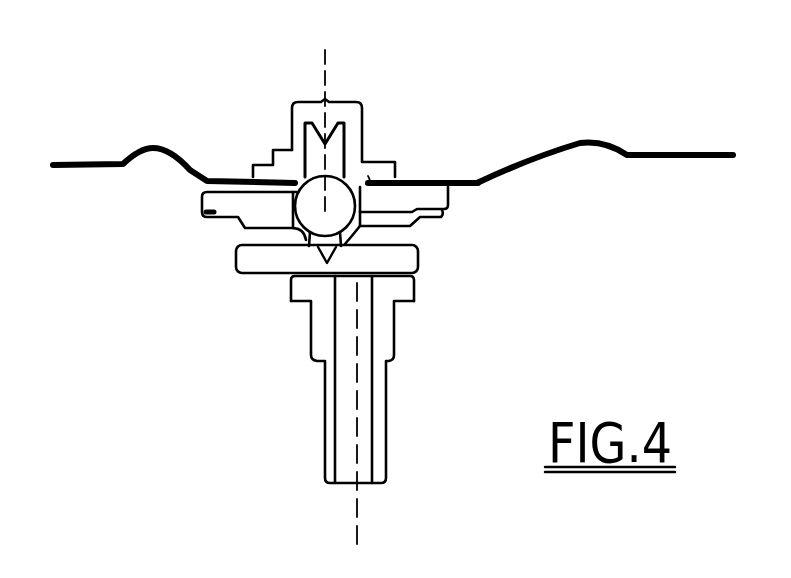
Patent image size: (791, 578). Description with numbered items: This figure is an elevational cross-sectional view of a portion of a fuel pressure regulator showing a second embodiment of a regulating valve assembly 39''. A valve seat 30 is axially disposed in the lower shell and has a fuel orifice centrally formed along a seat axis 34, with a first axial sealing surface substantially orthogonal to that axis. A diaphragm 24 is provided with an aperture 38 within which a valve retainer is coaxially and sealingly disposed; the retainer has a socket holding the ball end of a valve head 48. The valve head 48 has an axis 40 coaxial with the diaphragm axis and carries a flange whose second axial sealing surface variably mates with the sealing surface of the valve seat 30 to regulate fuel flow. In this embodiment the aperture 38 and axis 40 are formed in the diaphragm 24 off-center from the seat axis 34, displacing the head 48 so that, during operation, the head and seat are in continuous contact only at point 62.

The diaphragm 24 is at (582, 140).
The regulating valve assembly 39'' is at (466, 103).
The aperture 38 is at (369, 159).
The axis 40 is at (325, 70).
The valve head 48 is at (218, 263).
The valve seat 30 is at (342, 357).
The point 62 is at (410, 275).
The seat axis 34 is at (353, 378).